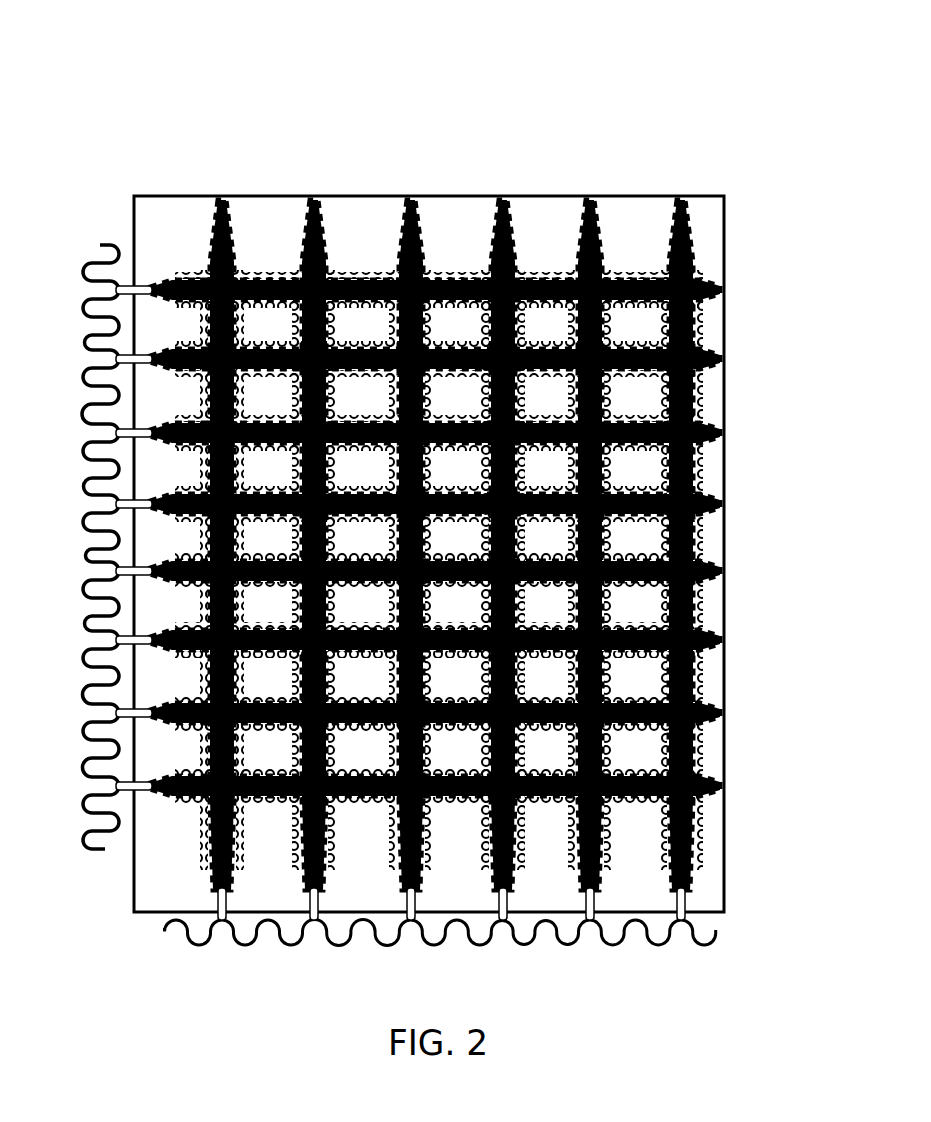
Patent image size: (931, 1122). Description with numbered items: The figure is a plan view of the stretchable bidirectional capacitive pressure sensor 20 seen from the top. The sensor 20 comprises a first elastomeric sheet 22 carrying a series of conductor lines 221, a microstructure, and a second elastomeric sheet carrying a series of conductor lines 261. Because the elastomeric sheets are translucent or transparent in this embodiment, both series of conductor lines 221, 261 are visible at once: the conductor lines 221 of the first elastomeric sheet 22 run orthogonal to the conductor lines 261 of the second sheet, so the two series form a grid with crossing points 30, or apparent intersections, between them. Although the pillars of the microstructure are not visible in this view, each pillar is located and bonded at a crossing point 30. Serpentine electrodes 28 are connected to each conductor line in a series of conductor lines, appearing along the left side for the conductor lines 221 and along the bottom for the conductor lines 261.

The stretchable bidirectional capacitive pressure sensor 20 is at (716, 88).
The first elastomeric sheet 22 is at (716, 213).
The series of conductor lines 221 is at (721, 288).
The series of conductor lines 261 is at (222, 198).
The serpentine electrodes 28 is at (100, 245).
The crossing points 30 is at (210, 806).